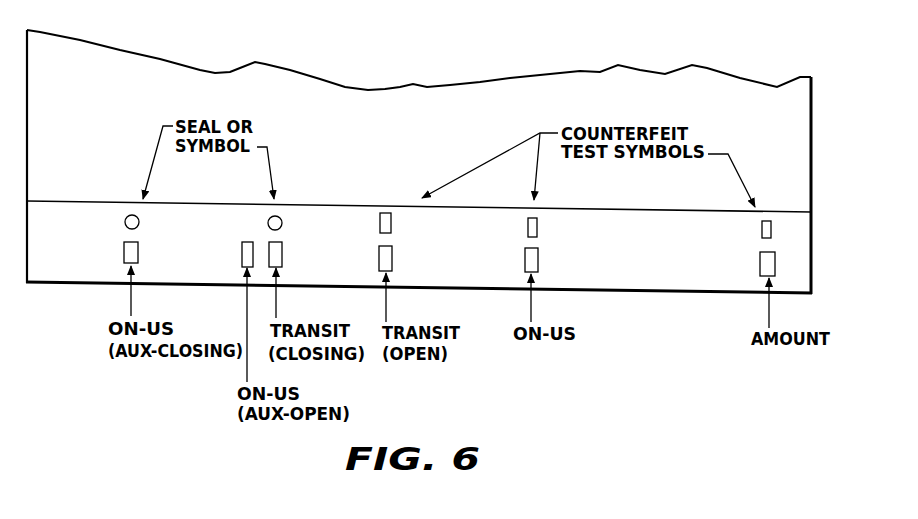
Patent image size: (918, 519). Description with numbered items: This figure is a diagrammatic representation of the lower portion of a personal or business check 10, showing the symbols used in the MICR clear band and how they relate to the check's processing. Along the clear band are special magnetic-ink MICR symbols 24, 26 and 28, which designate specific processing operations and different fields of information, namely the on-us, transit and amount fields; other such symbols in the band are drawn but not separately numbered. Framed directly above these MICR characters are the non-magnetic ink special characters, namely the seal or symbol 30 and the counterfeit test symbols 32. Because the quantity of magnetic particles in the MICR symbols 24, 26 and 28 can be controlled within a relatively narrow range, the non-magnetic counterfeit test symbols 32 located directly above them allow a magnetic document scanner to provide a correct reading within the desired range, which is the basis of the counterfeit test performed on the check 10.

The check 10 is at (455, 83).
The special MICR symbol 24 is at (124, 256).
The special MICR symbol 26 is at (392, 263).
The special MICR symbol 28 is at (538, 265).
The non-magnetic ink symbol 30 is at (268, 222).
The non-magnetic counterfeit test symbol 32 is at (386, 212).